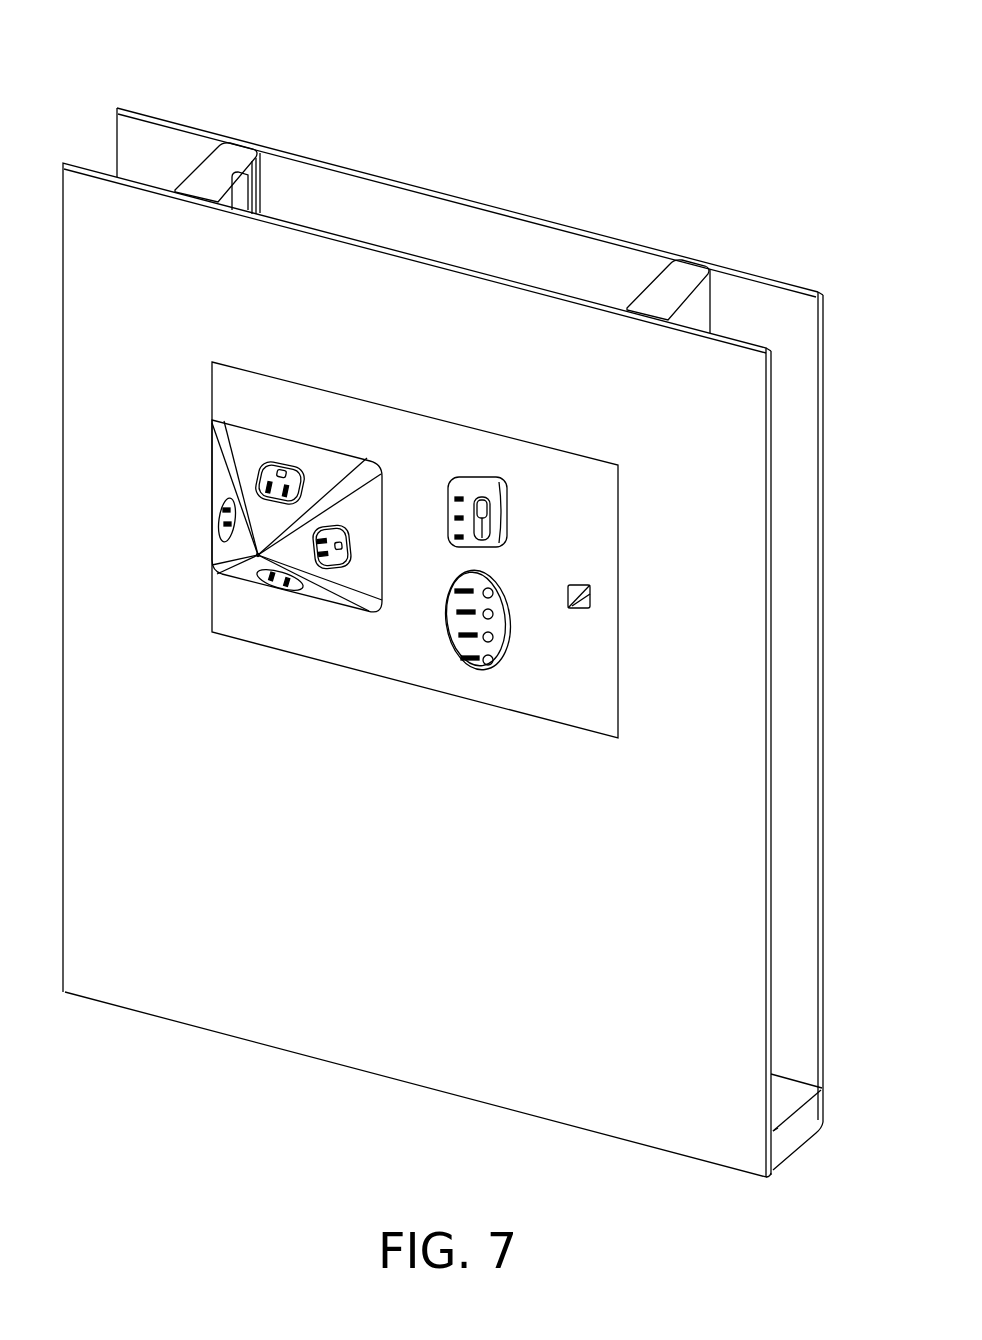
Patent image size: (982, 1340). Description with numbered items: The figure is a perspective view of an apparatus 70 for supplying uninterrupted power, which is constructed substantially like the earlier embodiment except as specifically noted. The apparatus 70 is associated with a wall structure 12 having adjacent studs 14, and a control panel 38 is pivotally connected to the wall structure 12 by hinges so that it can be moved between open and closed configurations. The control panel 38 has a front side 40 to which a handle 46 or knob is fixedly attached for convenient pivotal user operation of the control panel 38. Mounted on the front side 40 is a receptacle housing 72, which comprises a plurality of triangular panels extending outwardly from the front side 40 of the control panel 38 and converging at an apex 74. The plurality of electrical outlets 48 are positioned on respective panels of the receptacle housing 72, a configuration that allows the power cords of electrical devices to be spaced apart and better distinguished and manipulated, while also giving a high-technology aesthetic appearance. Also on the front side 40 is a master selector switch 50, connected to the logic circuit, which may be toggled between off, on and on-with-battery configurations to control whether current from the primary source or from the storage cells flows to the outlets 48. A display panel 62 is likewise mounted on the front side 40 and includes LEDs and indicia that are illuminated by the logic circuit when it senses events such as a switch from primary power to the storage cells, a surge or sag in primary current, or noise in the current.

The apparatus 70 is at (552, 88).
The wall structure 12 is at (712, 232).
The studs 14 is at (711, 312).
The control panel 38 is at (640, 716).
The front side 40 is at (600, 717).
The receptacle housing 72 is at (312, 440).
The apex 74 is at (258, 555).
The electrical outlets 48 is at (332, 569).
The master selector switch 50 is at (492, 503).
The display panel 62 is at (505, 628).
The handle 46 is at (591, 601).